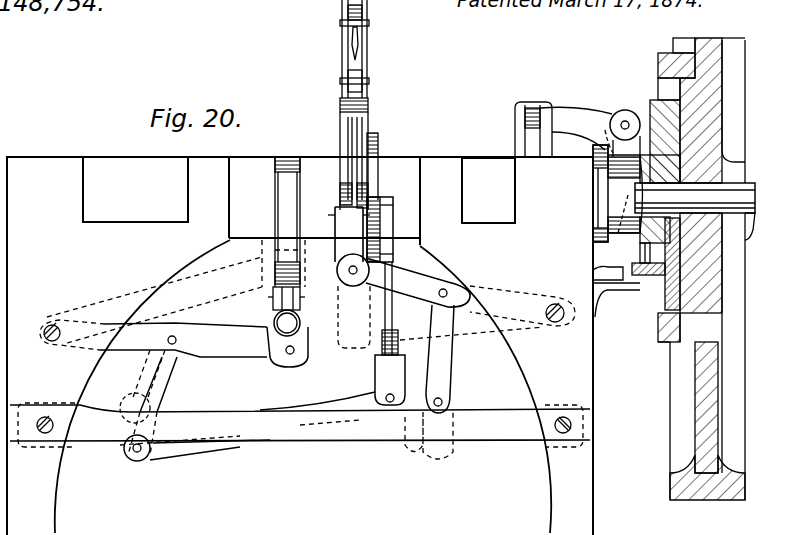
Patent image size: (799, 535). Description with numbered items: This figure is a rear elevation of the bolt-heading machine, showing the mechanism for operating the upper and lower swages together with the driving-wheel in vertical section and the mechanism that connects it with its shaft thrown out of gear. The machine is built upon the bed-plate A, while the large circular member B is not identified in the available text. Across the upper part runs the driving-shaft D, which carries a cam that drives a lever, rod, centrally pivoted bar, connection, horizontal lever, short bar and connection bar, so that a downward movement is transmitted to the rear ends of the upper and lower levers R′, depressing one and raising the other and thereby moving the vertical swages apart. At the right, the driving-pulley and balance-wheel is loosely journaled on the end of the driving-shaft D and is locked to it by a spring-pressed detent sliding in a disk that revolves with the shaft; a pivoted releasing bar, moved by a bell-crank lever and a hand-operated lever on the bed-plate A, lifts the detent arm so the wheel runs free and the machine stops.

The bed-plate A is at (300, 345).
The wheel B is at (299, 386).
The driving-shaft D is at (695, 198).
The upper and lower levers R′ is at (323, 143).